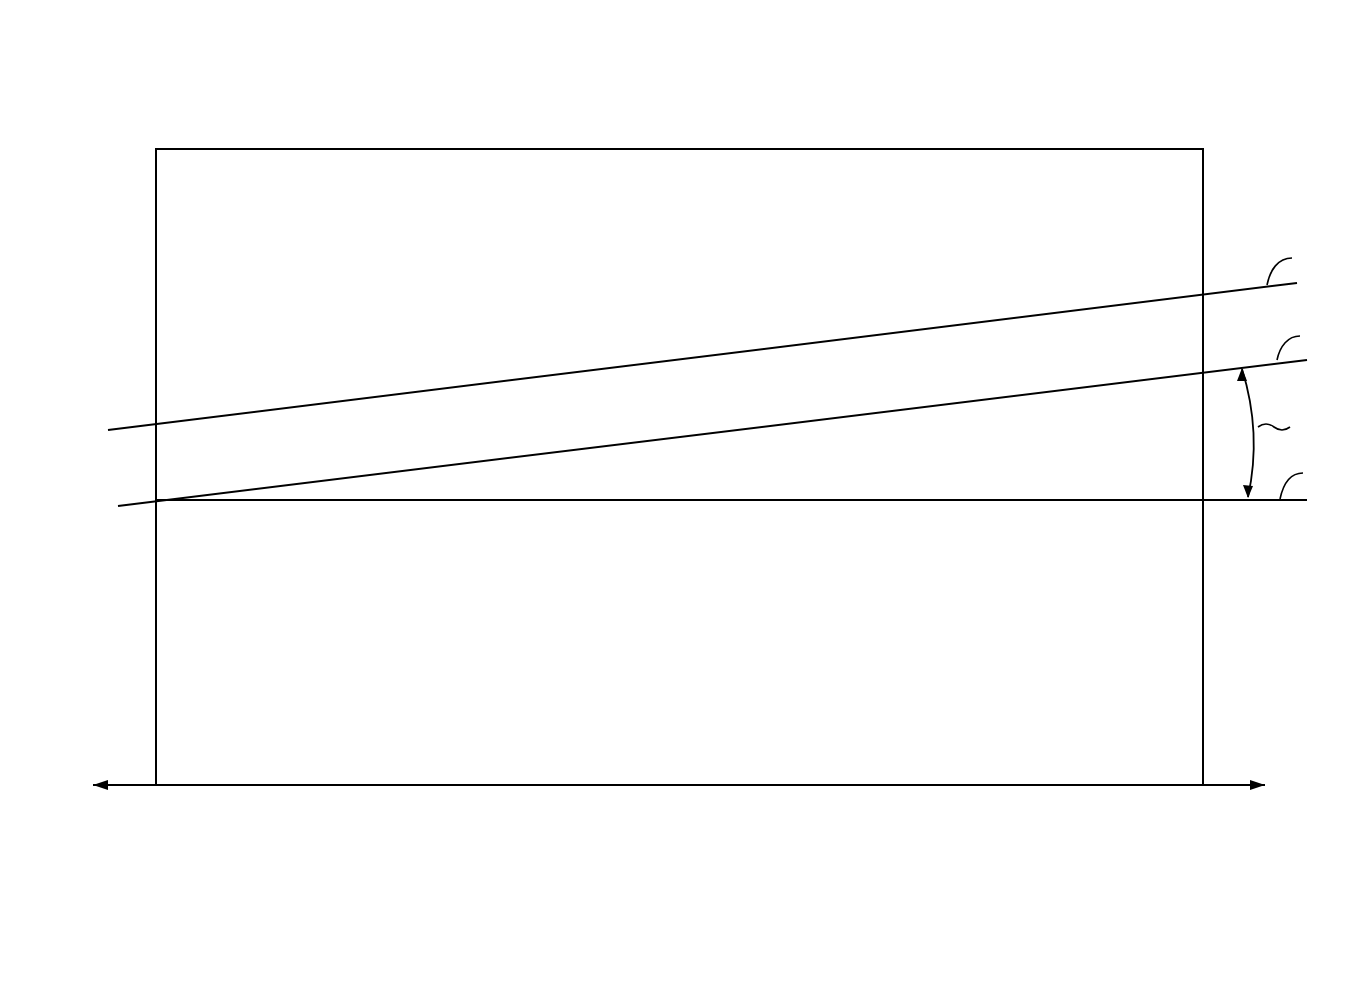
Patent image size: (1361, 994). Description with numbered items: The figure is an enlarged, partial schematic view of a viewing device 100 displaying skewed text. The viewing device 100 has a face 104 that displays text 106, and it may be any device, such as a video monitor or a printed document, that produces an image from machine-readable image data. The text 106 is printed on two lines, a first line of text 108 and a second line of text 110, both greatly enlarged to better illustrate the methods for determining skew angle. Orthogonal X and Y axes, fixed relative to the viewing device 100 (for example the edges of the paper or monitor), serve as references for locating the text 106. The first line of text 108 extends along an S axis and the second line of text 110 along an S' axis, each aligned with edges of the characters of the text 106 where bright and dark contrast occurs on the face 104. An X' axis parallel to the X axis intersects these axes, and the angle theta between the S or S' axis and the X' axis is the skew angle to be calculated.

The viewing device 100 is at (1092, 92).
The face 104 is at (349, 256).
The text 106 is at (975, 255).
The first line of text 108 is at (1050, 285).
The second line of text 110 is at (752, 407).